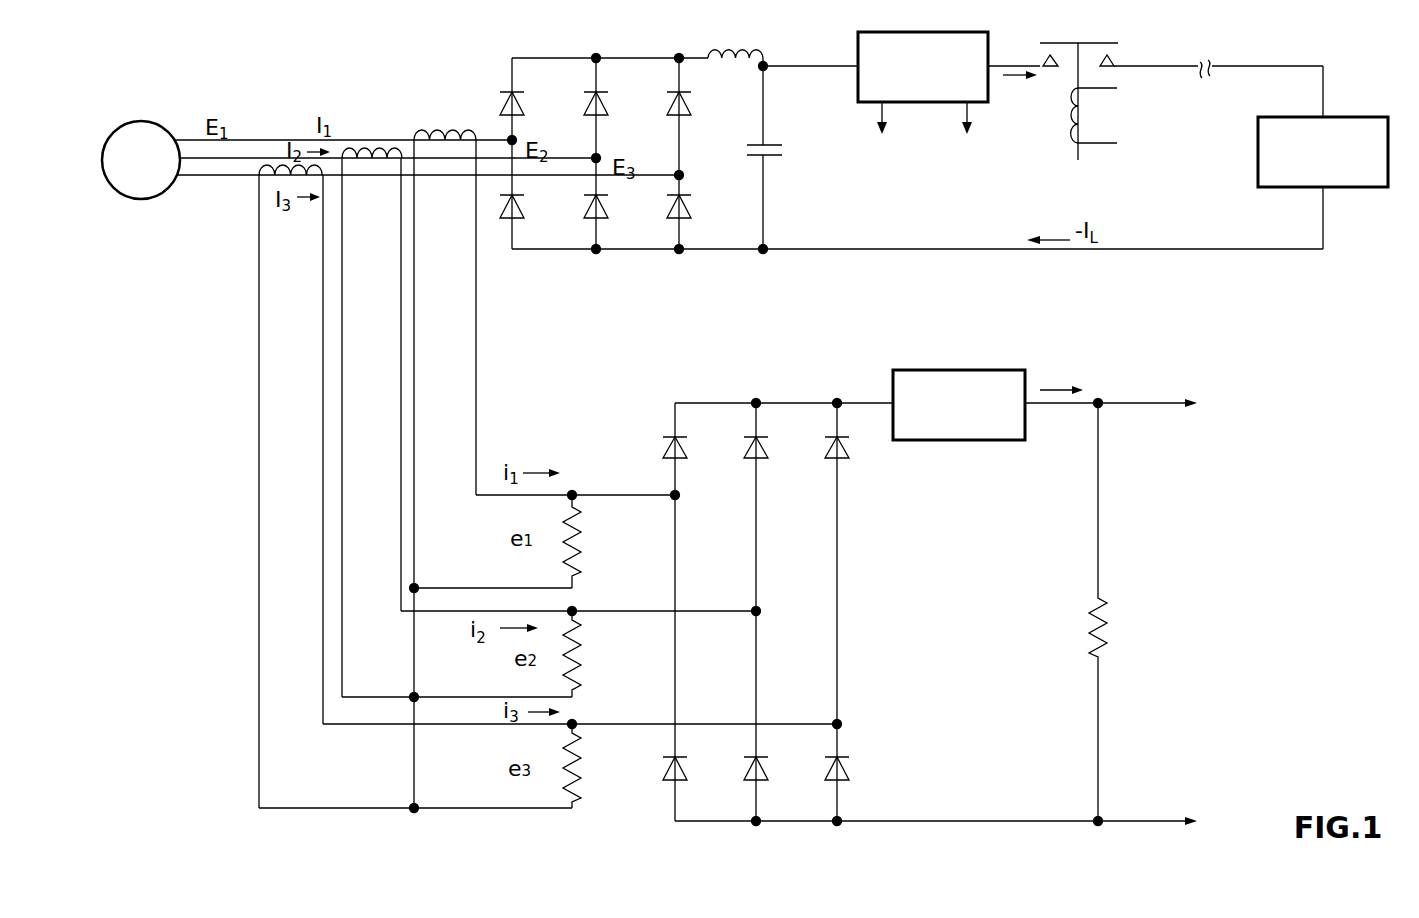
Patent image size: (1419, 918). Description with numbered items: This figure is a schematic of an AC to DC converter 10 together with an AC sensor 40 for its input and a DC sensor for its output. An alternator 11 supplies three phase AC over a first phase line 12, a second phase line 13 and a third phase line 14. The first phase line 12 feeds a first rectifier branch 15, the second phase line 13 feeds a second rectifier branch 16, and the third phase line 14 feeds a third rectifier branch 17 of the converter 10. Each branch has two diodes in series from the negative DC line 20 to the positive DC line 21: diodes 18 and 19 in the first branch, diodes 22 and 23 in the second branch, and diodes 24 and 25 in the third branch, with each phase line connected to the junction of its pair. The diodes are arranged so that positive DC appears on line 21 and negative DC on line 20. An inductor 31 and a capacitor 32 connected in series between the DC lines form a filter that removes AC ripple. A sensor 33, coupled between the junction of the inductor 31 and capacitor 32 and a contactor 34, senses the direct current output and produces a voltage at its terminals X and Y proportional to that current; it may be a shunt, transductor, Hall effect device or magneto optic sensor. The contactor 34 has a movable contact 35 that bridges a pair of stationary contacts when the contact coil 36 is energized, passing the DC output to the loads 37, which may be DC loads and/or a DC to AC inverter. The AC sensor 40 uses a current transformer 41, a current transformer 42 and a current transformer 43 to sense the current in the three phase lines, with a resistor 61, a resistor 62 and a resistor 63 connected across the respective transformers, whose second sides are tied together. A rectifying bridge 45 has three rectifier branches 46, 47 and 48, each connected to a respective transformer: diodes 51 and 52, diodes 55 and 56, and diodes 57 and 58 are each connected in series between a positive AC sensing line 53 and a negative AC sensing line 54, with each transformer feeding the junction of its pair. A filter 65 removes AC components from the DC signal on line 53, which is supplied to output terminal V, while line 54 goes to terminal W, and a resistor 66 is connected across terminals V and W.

The AC to DC converter 10 is at (575, 41).
The alternator 11 is at (145, 199).
The first phase line 12 is at (252, 140).
The second phase line 13 is at (245, 162).
The third phase line 14 is at (190, 177).
The first rectifier branch 15 is at (466, 82).
The second rectifier branch 16 is at (618, 50).
The third rectifier branch 17 is at (695, 146).
The diode 18 is at (508, 92).
The diode 19 is at (507, 222).
The negative DC line 20 is at (647, 252).
The positive DC line 21 is at (697, 55).
The diode 22 is at (588, 92).
The diode 23 is at (592, 222).
The diode 24 is at (675, 112).
The diode 25 is at (686, 220).
The inductor 31 is at (766, 62).
The capacitor 32 is at (772, 157).
The sensor 33 is at (857, 88).
The contactor 34 is at (1100, 32).
The movable contact 35 is at (1108, 40).
The contact coil 36 is at (1070, 133).
The loads 37 is at (1285, 180).
The AC sensor 40 is at (640, 374).
The current transformer 41 is at (447, 132).
The current transformer 42 is at (372, 150).
The current transformer 43 is at (275, 180).
The rectifying bridge 45 is at (744, 369).
The rectifier branch 46 is at (644, 472).
The rectifier branch 47 is at (740, 528).
The rectifier branch 48 is at (856, 499).
The diode 51 is at (670, 437).
The diode 52 is at (672, 782).
The positive AC sensing line 53 is at (692, 402).
The negative AC sensing line 54 is at (722, 820).
The diode 55 is at (757, 437).
The diode 56 is at (755, 757).
The diode 57 is at (836, 437).
The diode 58 is at (850, 772).
The resistor 61 is at (580, 547).
The resistor 62 is at (580, 655).
The resistor 63 is at (582, 790).
The filter 65 is at (987, 373).
The resistor 66 is at (1110, 628).